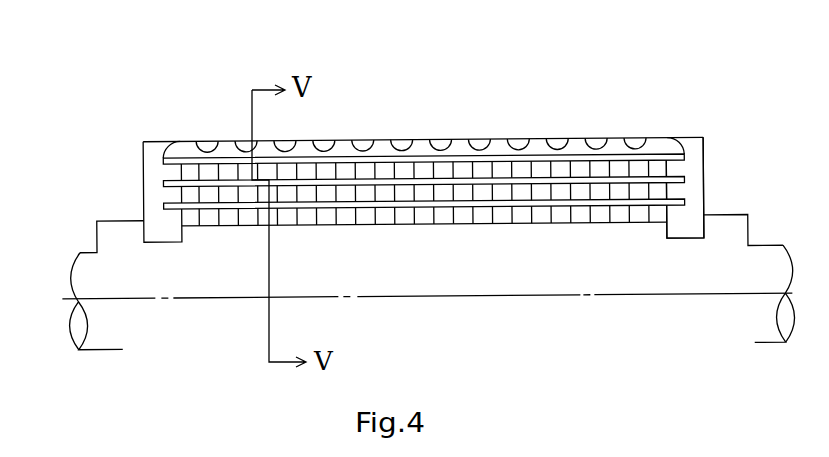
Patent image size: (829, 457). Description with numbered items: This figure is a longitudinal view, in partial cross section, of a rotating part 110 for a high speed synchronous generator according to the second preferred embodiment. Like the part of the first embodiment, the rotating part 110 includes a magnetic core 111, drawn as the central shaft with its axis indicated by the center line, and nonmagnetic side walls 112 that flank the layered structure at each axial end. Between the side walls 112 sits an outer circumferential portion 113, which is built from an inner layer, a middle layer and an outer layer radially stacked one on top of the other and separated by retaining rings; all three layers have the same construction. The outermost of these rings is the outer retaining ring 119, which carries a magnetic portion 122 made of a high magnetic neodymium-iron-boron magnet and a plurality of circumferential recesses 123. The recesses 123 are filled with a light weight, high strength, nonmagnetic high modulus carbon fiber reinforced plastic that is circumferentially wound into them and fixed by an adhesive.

The rotating part 110 is at (492, 107).
The magnetic core 111 is at (228, 279).
The nonmagnetic side walls 112 is at (690, 188).
The outer circumferential portion 113 is at (532, 227).
The outer retaining ring 119 is at (578, 143).
The magnetic portion 122 is at (383, 150).
The circumferential recesses 123 is at (363, 143).